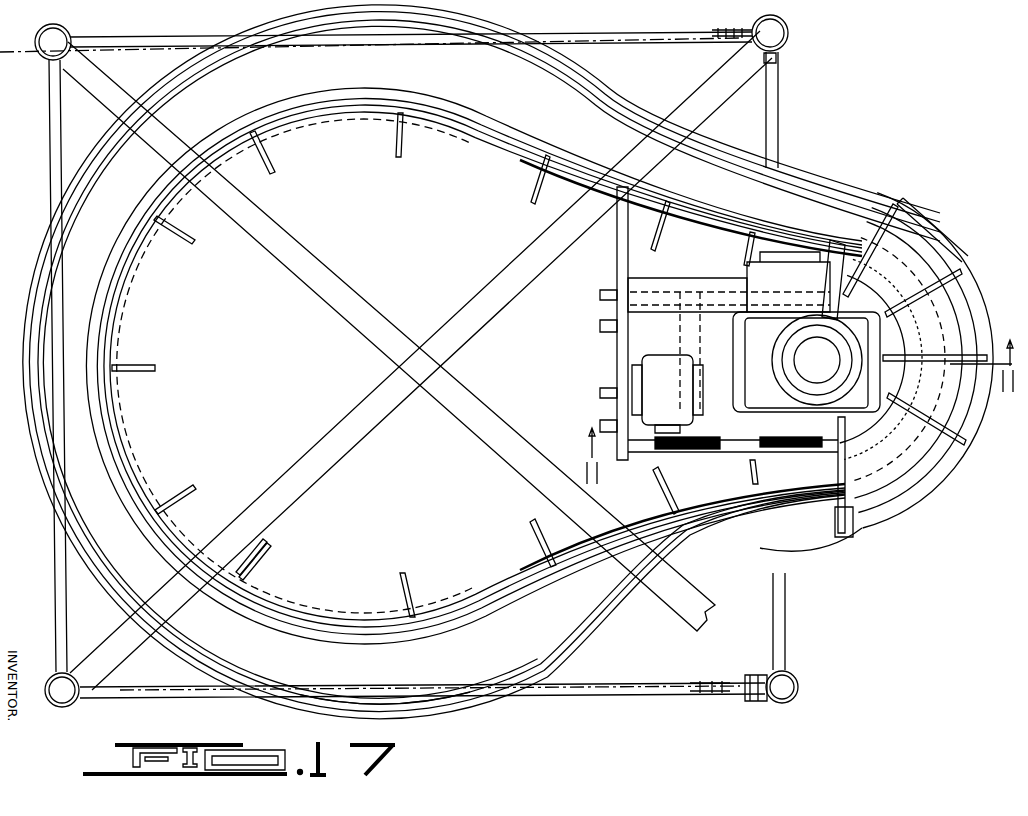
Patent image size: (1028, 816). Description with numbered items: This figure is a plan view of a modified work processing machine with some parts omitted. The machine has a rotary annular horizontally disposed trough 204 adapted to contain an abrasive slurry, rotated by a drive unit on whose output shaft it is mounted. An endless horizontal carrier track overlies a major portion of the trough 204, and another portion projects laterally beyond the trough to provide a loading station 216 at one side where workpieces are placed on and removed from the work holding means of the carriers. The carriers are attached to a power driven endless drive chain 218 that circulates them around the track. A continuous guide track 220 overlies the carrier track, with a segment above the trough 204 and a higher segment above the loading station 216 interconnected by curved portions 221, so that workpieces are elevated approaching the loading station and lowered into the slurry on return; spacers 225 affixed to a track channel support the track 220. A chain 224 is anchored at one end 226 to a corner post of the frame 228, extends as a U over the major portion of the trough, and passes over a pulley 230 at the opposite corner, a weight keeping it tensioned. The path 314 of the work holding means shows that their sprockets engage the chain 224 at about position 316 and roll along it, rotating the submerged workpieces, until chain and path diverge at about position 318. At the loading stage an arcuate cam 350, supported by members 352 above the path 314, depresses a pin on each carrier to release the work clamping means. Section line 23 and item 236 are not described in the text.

The trough 204 is at (596, 628).
The loading station 216 is at (943, 222).
The drive chain 218 is at (446, 590).
The track 220 is at (512, 138).
The curved portions 221 is at (688, 170).
The chain 224 is at (640, 40).
The spacers 225 is at (195, 490).
The end 226 is at (740, 32).
The frame 228 is at (492, 288).
The pulley 230 is at (748, 690).
The motor shaft 236 is at (812, 345).
The section line 23 is at (783, 399).
The path 314 is at (226, 90).
The position 316 is at (372, 48).
The position 318 is at (392, 682).
The arcuate cam 350 is at (940, 490).
The members 352 is at (940, 250).